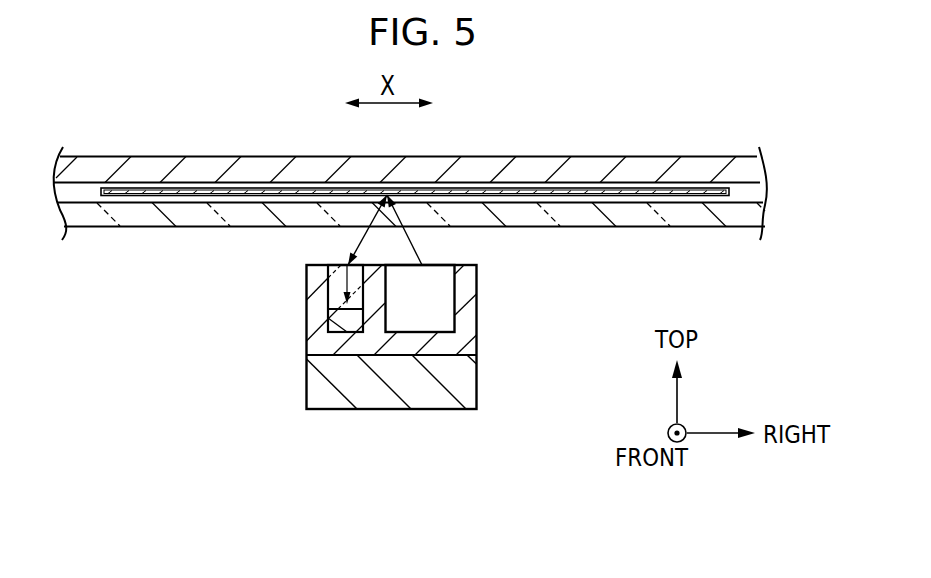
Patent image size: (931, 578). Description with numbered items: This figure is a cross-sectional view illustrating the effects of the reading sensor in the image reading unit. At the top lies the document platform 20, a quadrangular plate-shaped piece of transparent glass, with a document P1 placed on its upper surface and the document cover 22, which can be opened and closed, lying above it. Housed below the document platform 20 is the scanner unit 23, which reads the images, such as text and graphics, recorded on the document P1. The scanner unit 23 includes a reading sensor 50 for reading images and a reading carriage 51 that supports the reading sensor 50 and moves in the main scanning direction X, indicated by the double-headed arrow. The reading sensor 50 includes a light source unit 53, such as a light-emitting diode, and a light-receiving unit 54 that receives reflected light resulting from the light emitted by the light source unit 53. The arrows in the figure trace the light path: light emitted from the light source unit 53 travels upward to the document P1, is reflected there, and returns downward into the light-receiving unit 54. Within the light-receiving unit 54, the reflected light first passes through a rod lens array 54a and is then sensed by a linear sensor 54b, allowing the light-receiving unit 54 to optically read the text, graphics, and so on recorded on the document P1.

The document platform 20 is at (625, 218).
The document cover 22 is at (578, 167).
The document P1 is at (642, 190).
The scanner unit 23 is at (322, 417).
The reading sensor 50 is at (468, 320).
The reading carriage 51 is at (468, 372).
The light source unit 53 is at (435, 275).
The light-receiving unit 54 is at (240, 270).
The rod lens array 54a is at (340, 278).
The linear sensor 54b is at (340, 320).